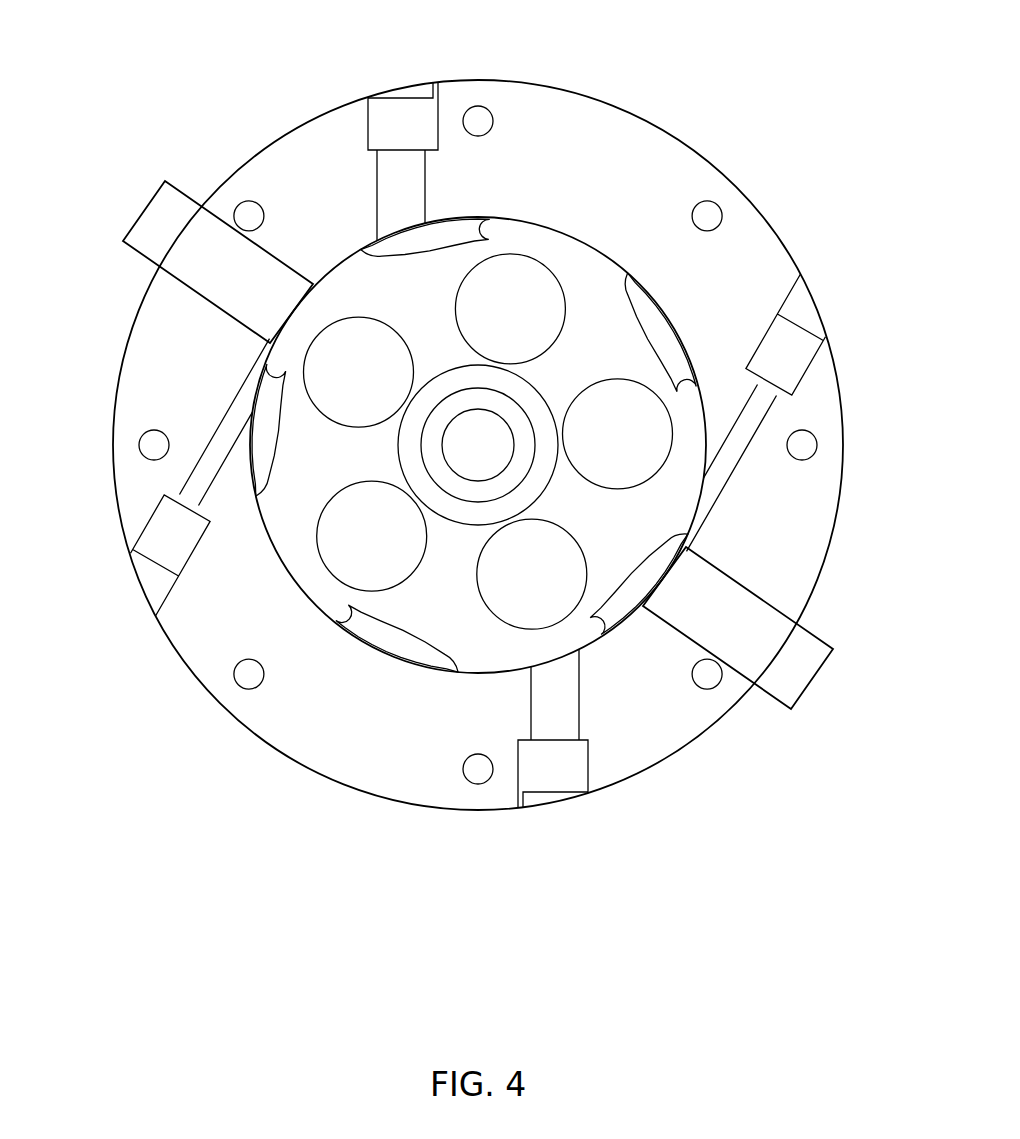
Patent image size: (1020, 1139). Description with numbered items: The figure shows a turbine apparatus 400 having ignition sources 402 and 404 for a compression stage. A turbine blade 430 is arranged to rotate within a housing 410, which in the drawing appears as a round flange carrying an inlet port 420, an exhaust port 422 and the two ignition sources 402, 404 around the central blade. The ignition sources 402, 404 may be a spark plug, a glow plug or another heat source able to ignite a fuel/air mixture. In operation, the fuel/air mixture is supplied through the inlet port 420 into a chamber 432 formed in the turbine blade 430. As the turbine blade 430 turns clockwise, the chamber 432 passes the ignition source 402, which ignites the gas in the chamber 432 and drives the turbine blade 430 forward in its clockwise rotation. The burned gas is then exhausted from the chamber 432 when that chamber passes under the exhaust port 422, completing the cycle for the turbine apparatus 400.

The turbine apparatus 400 is at (801, 90).
The ignition source 402 is at (800, 686).
The ignition source 404 is at (147, 204).
The housing 410 is at (598, 96).
The inlet port 420 is at (810, 303).
The exhaust port 422 is at (548, 800).
The turbine blade 430 is at (520, 218).
The chamber 432 is at (612, 617).